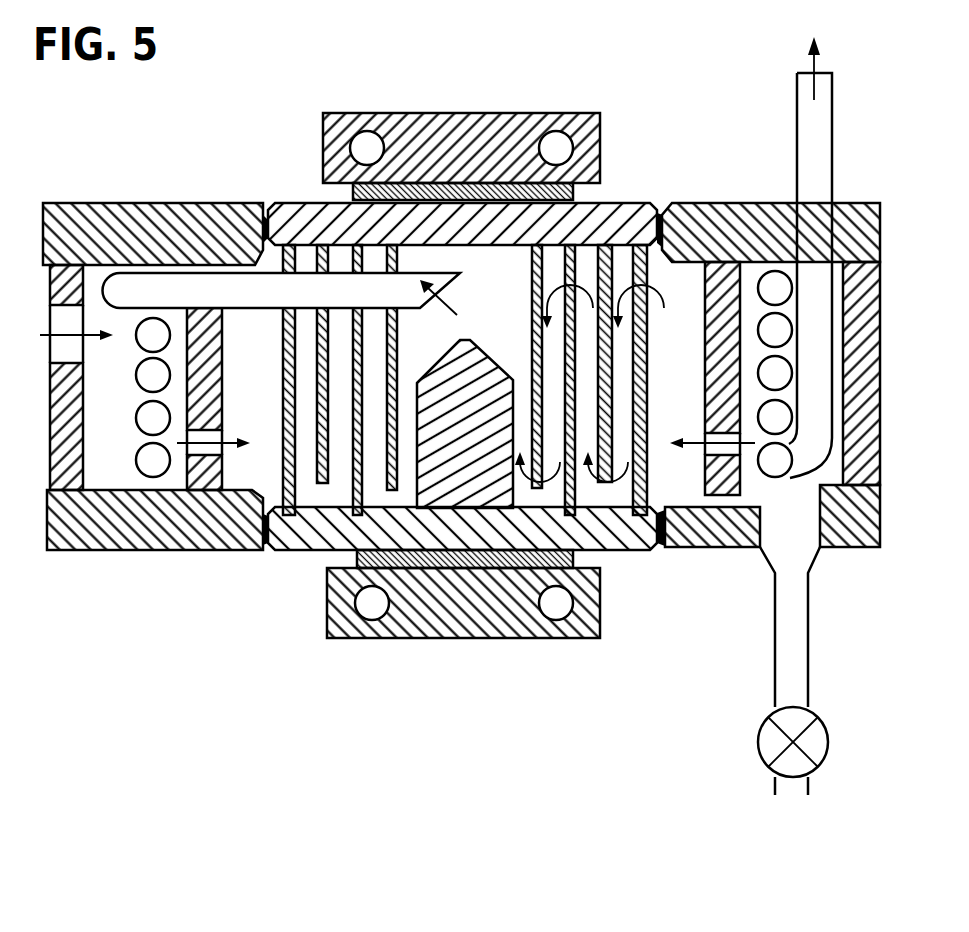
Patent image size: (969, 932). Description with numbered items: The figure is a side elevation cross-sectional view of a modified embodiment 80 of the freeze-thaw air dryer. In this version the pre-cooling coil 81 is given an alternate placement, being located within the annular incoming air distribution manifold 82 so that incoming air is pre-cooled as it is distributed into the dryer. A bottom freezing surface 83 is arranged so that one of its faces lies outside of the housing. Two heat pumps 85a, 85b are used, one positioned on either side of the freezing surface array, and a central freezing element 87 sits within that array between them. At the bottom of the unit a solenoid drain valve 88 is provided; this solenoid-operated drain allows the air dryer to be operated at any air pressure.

The modified embodiment of the freeze-thaw air dryer 80 is at (113, 626).
The pre-cooling coil 81 is at (137, 392).
The annular incoming air distribution manifold 82 is at (100, 457).
The bottom freezing surface 83 is at (303, 552).
The heat pump 85a is at (572, 196).
The heat pump 85b is at (578, 558).
The central freezing element 87 is at (483, 350).
The solenoid drain valve 88 is at (758, 733).